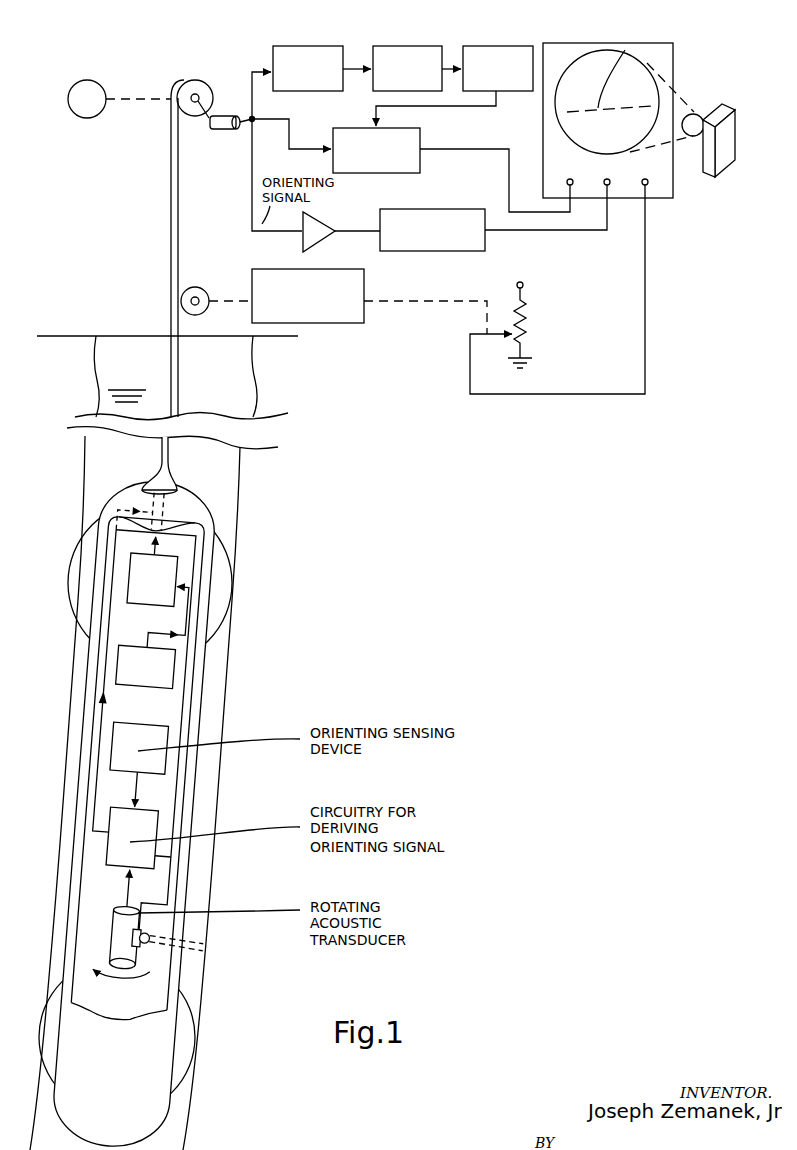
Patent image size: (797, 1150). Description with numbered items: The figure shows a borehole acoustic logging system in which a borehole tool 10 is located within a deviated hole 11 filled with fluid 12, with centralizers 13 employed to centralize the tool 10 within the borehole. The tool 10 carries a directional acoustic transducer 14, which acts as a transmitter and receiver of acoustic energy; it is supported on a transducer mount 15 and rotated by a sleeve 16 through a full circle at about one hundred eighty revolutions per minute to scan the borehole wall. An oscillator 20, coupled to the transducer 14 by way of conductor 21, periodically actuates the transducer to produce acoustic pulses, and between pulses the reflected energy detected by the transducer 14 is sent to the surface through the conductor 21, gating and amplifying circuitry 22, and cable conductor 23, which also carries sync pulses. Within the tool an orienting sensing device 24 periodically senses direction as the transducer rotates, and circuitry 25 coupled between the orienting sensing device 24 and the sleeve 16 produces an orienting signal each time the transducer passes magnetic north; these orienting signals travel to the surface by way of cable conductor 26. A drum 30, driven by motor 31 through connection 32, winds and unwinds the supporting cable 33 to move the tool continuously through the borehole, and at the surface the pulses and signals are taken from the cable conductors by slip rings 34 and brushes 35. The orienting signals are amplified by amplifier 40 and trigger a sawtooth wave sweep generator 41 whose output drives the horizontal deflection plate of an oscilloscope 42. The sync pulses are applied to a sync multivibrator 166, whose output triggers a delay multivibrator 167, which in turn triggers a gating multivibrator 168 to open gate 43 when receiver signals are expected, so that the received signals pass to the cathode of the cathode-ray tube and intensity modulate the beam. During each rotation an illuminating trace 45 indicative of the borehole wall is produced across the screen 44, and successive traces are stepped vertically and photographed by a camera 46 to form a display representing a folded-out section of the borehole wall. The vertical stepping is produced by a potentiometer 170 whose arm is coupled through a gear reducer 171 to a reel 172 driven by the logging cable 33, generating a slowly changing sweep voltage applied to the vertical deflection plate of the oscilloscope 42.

The motor 31 is at (77, 80).
The connection 32 is at (127, 97).
The drum 30 is at (186, 81).
The slip rings 34 is at (200, 102).
The brushes 35 is at (210, 122).
The supporting cable 33 is at (170, 208).
The sync multivibrator 166 is at (310, 46).
The delay multivibrator 167 is at (410, 46).
The gating multivibrator 168 is at (500, 46).
The gate 43 is at (420, 160).
The screen 44 is at (584, 58).
The trace 45 is at (621, 52).
The oscilloscope 42 is at (673, 70).
The camera 46 is at (730, 162).
The amplifier 40 is at (320, 239).
The sawtooth wave sweep generator 41 is at (457, 251).
The potentiometer 170 is at (527, 318).
The gear reducer 171 is at (340, 324).
The reel 172 is at (204, 288).
The deviated hole 11 is at (100, 353).
The fluid 12 is at (141, 375).
The borehole tool 10 is at (128, 488).
The centralizers 13 is at (69, 586).
The cable conductor 23 is at (163, 547).
The gating and amplifying circuitry 22 is at (177, 571).
The oscillator 20 is at (130, 647).
The cable conductor 26 is at (102, 712).
The orienting sensing device 24 is at (112, 755).
The conductor 21 is at (183, 770).
The circuitry 25 is at (160, 857).
The sleeve 16 is at (113, 912).
The transducer mount 15 is at (120, 949).
The directional acoustic transducer 14 is at (145, 957).